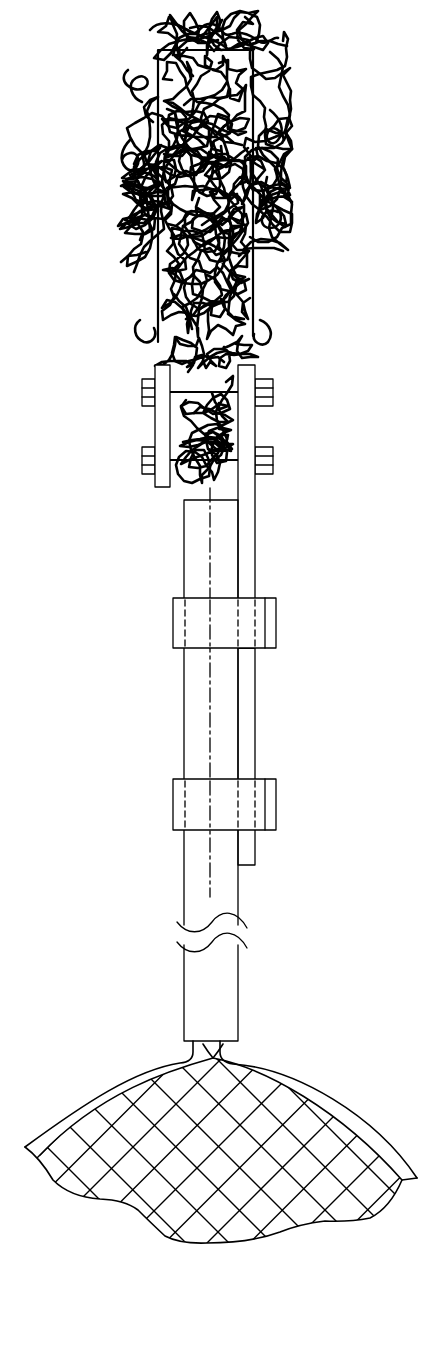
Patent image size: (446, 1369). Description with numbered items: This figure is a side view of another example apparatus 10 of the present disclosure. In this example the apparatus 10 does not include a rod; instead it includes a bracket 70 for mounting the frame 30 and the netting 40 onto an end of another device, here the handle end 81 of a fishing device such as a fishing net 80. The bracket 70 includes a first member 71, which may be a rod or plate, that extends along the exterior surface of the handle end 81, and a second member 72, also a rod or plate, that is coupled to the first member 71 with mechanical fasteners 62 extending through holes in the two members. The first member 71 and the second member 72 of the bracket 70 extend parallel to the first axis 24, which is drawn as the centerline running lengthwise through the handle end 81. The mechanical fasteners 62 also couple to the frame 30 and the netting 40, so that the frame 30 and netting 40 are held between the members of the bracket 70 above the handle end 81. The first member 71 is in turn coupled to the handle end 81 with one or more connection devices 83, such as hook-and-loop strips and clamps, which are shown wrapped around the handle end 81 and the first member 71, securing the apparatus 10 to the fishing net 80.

The apparatus 10 is at (310, 344).
The first axis 24 is at (210, 722).
The frame 30 is at (152, 307).
The netting 40 is at (140, 174).
The mechanical fasteners 62 is at (142, 393).
The bracket 70 is at (248, 518).
The first member 71 is at (247, 692).
The second member 72 is at (155, 423).
The fishing net 80 is at (210, 1003).
The handle end 81 is at (225, 727).
The connection devices 83 is at (172, 626).